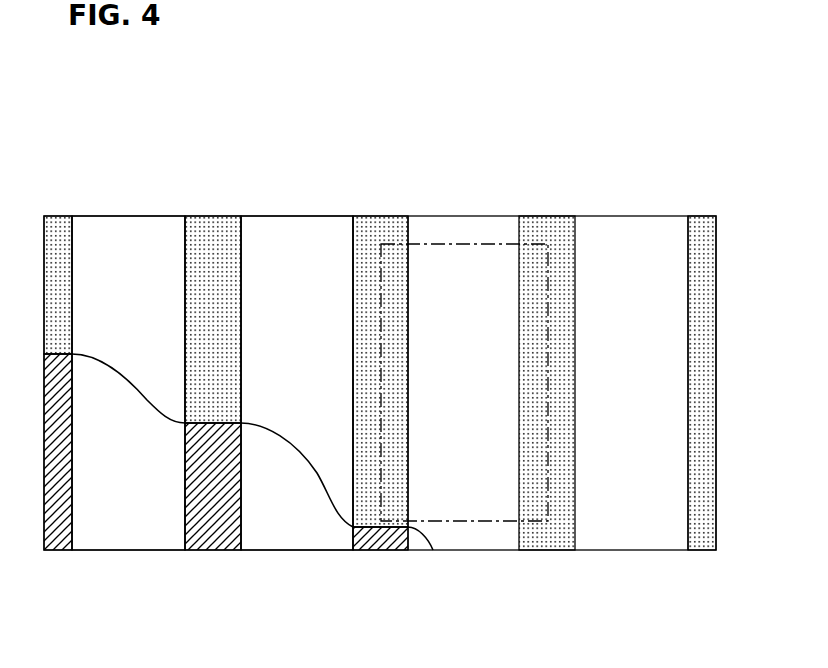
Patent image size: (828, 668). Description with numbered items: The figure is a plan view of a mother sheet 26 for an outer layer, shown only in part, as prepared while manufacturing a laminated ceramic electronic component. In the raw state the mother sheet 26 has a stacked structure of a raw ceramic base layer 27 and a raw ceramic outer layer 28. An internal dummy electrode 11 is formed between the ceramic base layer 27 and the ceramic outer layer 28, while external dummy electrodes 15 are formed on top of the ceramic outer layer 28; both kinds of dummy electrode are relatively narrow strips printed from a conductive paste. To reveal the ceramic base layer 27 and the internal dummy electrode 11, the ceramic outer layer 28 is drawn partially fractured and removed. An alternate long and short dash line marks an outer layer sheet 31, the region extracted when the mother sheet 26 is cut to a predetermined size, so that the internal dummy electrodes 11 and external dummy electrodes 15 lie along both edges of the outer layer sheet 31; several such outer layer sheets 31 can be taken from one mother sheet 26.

The mother sheet for an outer layer 26 is at (146, 133).
The ceramic base layer 27 is at (127, 533).
The internal dummy electrode 11 is at (218, 533).
The ceramic outer layer 28 is at (307, 218).
The outer layer sheet 31 is at (453, 244).
The external dummy electrode 15 is at (558, 225).